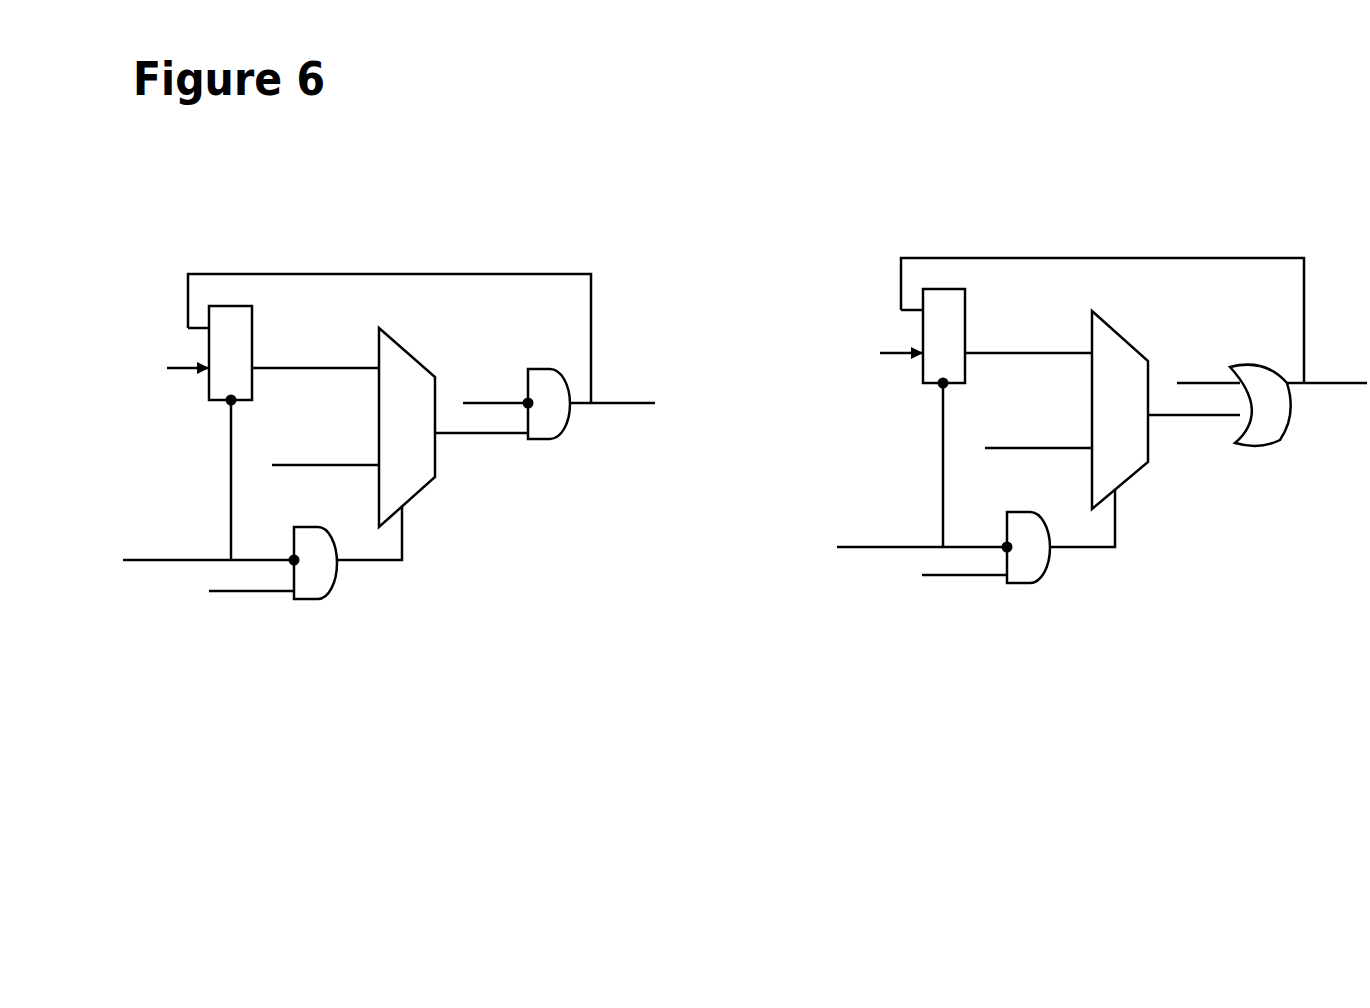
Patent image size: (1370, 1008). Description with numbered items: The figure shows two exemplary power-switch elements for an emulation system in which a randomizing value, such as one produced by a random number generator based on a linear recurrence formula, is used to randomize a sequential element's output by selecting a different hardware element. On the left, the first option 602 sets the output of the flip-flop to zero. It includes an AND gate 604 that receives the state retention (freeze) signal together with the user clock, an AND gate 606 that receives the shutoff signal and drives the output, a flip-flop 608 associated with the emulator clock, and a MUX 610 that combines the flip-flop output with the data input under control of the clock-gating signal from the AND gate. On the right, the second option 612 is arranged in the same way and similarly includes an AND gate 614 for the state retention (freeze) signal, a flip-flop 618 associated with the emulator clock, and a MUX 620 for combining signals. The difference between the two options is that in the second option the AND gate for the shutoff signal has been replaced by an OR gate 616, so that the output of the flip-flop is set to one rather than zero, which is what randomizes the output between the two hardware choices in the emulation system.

The first option 602 is at (500, 232).
The AND gate 604 is at (323, 598).
The AND gate 606 is at (553, 440).
The flip-flop 608 is at (232, 304).
The MUX 610 is at (413, 500).
The second option 612 is at (1246, 214).
The AND gate 614 is at (1030, 583).
The OR gate 616 is at (1270, 442).
The flip-flop 618 is at (942, 288).
The MUX 620 is at (1128, 480).